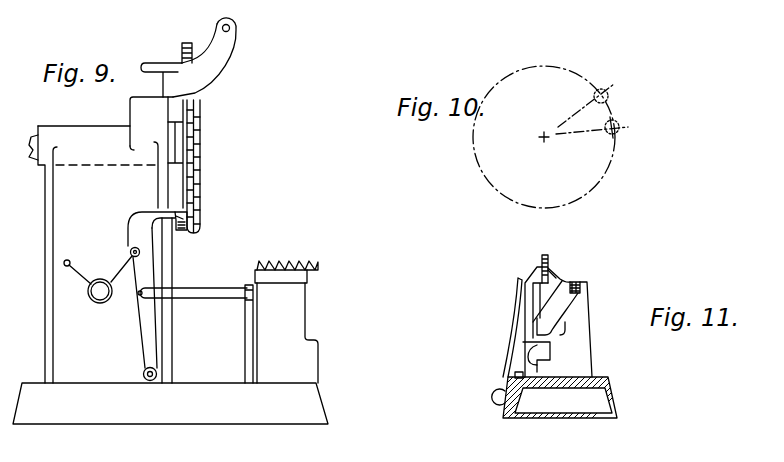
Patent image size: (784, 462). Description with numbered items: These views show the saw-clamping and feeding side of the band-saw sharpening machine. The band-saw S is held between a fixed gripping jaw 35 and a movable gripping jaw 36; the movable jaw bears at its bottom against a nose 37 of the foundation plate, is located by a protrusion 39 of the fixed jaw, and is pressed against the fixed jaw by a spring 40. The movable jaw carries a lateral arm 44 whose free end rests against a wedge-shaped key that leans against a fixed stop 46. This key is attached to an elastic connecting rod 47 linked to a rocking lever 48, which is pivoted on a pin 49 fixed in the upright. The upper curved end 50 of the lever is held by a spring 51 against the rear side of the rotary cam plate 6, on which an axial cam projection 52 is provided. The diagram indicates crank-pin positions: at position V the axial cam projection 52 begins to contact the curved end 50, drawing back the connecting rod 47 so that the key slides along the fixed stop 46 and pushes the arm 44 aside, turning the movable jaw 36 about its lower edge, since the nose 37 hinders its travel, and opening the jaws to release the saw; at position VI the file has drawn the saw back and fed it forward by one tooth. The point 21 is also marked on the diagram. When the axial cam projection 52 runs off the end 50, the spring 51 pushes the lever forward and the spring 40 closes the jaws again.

In FIG. 9, the rotary cam plate 6 is at (190, 177).
In FIG. 9, the upper curved end 50 is at (151, 216).
In FIG. 9, the spring 51 is at (100, 278).
In FIG. 9, the axial cam projection 52 is at (180, 233).
In FIG. 9, the elastic connecting rod 47 is at (201, 288).
In FIG. 9, the fixed stop 46 is at (245, 317).
In FIG. 11, the fixed stop 46 is at (581, 287).
In FIG. 9, the rocking lever 48 is at (143, 326).
In FIG. 9, the pin 49 is at (143, 375).
In FIG. 9, the fixed gripping jaw 35 is at (286, 322).
In FIG. 11, the fixed gripping jaw 35 is at (554, 277).
In FIG. 10, the position point 21 is at (604, 140).
In FIG. 10, the crank-pin position V is at (609, 90).
In FIG. 10, the crank-pin position VI is at (622, 127).
In FIG. 11, the band-saw S is at (550, 259).
In FIG. 11, the movable gripping jaw 36 is at (530, 300).
In FIG. 11, the protrusion 39 is at (540, 343).
In FIG. 11, the spring 40 is at (511, 363).
In FIG. 11, the nose 37 is at (522, 378).
In FIG. 11, the lateral arm 44 is at (546, 311).